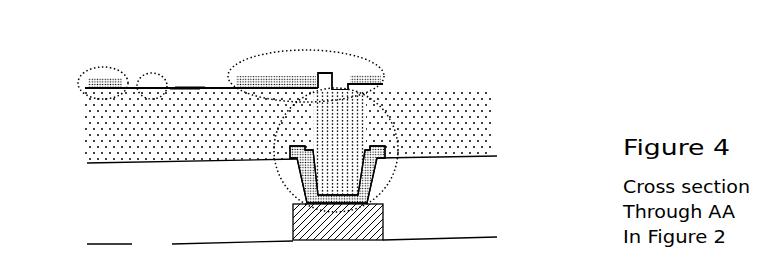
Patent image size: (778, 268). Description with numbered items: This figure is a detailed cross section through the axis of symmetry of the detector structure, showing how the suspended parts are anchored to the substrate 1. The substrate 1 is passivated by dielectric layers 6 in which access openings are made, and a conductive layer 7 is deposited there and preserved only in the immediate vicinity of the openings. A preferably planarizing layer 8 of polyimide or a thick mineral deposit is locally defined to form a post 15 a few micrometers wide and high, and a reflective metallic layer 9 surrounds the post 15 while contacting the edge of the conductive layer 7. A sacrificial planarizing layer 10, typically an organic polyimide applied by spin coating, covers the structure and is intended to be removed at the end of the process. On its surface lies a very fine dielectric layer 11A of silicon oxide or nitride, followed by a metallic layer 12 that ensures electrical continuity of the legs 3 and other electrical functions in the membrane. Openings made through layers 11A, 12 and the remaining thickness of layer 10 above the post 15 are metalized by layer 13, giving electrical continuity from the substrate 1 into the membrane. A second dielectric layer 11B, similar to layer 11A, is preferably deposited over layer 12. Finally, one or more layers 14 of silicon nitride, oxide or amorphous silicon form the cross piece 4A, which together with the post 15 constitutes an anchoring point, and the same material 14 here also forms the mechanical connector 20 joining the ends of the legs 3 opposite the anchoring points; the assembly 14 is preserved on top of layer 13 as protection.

The substrate 1 is at (292, 242).
The legs 3 is at (144, 64).
The cross piece 4A is at (369, 50).
The dielectric layers 6 is at (448, 198).
The conductive layer 7 is at (296, 188).
The planarizing layer 8 is at (318, 131).
The reflective metallic layer 9 is at (478, 150).
The sacrificial planarizing material layer 10 is at (468, 90).
The first dielectric layer 11A is at (177, 100).
The second dielectric layer 11B is at (179, 75).
The metallic layer 12 is at (212, 76).
The metallization layer 13 is at (326, 64).
The cross piece material layers 14 is at (276, 64).
The post 15 is at (394, 101).
The mechanical connector 20 is at (81, 60).